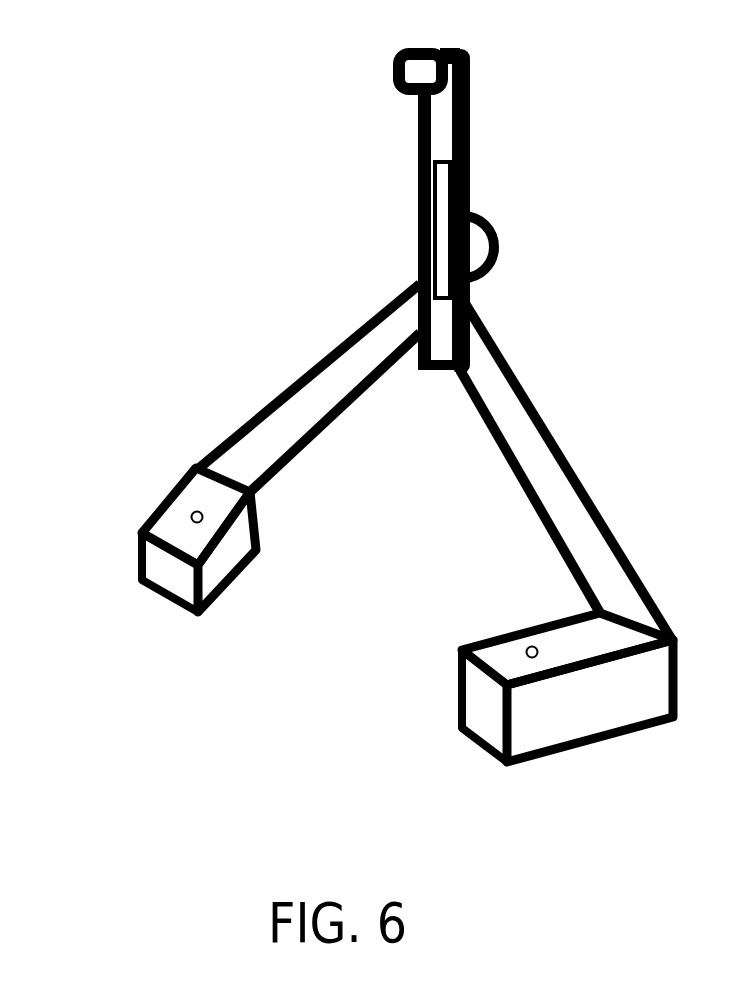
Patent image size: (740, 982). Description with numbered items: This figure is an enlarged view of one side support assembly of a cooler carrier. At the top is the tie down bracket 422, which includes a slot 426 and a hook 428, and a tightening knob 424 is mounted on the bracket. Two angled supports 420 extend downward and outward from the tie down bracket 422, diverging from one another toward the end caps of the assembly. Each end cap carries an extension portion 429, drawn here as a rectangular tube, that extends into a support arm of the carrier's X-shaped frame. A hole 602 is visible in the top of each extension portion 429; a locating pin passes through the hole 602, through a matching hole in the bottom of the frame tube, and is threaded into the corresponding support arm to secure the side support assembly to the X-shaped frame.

The hook 428 is at (397, 68).
The tie down bracket 422 is at (445, 150).
The slot 426 is at (448, 182).
The tightening knob 424 is at (497, 232).
The angled support 420 is at (307, 380).
The extension portion 429 is at (230, 583).
The hole 602 is at (193, 510).